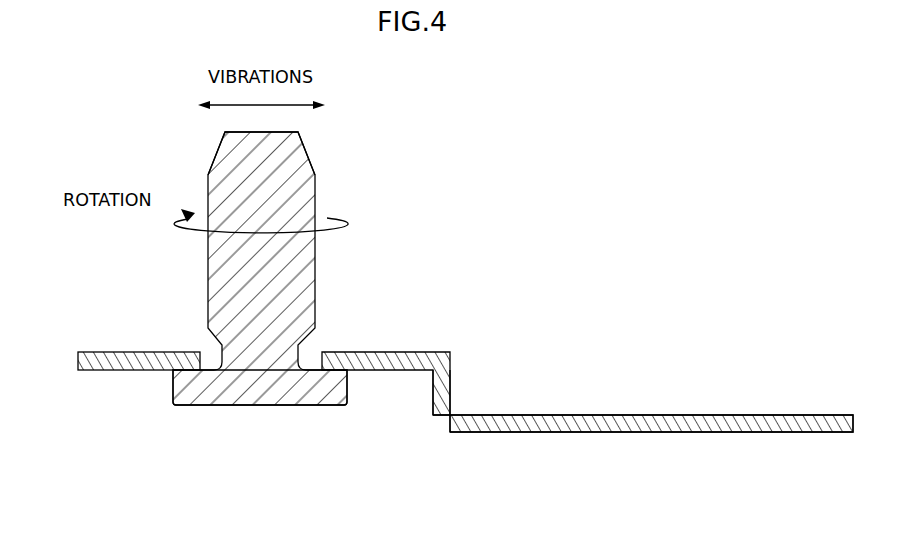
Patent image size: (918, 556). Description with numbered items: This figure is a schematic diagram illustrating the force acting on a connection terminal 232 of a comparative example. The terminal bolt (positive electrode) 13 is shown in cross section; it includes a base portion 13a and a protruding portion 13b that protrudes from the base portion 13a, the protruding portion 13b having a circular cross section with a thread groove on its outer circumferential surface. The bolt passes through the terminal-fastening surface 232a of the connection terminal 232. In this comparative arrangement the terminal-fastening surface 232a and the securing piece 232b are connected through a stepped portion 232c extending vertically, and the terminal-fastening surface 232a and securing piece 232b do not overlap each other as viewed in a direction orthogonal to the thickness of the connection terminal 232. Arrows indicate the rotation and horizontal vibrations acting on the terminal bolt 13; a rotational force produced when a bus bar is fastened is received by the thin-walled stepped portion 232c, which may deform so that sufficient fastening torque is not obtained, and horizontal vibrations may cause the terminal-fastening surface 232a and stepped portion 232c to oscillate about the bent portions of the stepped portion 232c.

The terminal bolt (positive electrode) 13 is at (330, 248).
The base portion 13a is at (290, 212).
The protruding portion 13b is at (242, 388).
The connection terminal 232 is at (555, 368).
The terminal-fastening surface 232a is at (137, 352).
The securing piece 232b is at (712, 415).
The stepped portion 232c is at (433, 397).